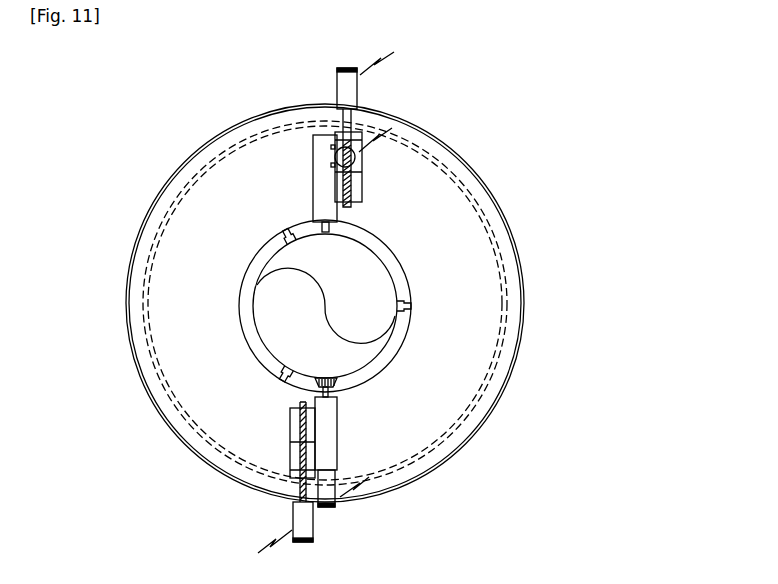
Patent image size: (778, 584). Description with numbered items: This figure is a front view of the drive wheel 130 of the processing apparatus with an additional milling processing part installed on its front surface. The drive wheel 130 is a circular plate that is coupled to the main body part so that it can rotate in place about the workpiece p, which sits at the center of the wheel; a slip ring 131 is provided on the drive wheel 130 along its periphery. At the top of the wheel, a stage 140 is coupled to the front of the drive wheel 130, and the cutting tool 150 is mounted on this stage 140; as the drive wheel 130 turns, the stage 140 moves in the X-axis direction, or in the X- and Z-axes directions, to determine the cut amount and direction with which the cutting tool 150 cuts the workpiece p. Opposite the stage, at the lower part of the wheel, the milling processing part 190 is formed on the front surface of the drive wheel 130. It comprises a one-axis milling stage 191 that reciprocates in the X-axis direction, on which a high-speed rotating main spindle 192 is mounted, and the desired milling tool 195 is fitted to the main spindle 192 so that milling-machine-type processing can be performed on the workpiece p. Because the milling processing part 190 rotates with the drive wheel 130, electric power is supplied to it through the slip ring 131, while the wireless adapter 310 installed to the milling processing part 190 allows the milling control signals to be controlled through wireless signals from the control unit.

The drive wheel 130 is at (130, 264).
The slip ring 131 is at (128, 340).
The stage 140 is at (383, 172).
The cutting tool 150 is at (297, 233).
The milling processing part 190 is at (330, 465).
The milling stage 191 is at (290, 446).
The main spindle 192 is at (337, 420).
The milling tool 195 is at (337, 387).
The wireless adapter 310 is at (270, 544).
The workpiece p is at (394, 284).